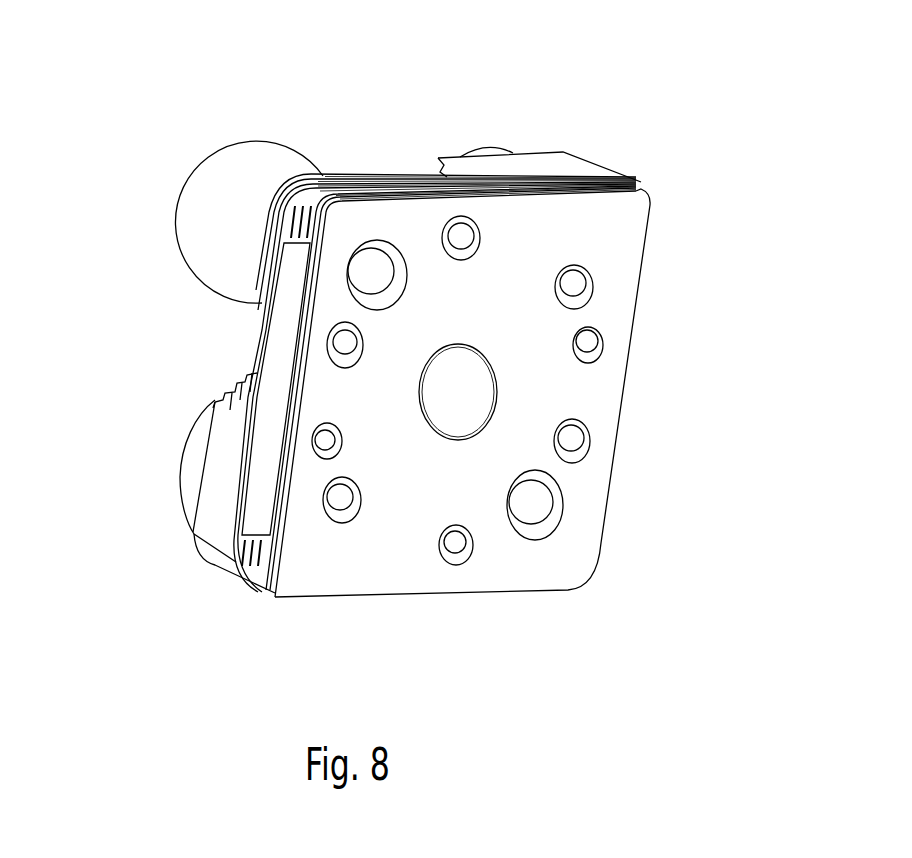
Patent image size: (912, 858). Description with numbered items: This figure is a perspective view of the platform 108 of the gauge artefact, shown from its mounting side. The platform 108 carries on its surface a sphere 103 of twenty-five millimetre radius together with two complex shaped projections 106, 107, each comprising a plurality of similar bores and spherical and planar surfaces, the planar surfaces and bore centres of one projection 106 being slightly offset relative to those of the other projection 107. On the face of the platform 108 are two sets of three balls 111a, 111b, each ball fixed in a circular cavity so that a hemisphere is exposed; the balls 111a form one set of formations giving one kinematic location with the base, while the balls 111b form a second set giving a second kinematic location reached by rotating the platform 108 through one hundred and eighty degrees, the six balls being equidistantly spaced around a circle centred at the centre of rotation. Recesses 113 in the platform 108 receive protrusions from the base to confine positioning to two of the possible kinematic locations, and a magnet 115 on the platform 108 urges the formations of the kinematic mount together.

The sphere 103 is at (178, 218).
The complex shaped projection 106 is at (180, 480).
The complex shaped projection 107 is at (485, 144).
The platform 108 is at (383, 175).
The balls 111a is at (580, 280).
The balls 111b is at (467, 236).
The recesses 113 is at (593, 346).
The magnet 115 is at (453, 413).